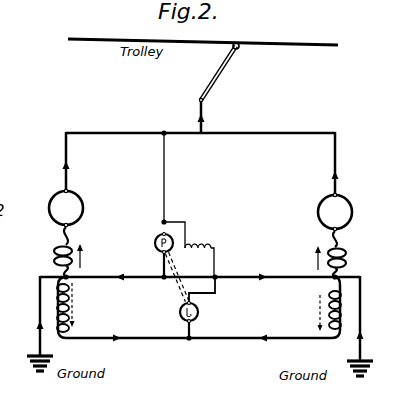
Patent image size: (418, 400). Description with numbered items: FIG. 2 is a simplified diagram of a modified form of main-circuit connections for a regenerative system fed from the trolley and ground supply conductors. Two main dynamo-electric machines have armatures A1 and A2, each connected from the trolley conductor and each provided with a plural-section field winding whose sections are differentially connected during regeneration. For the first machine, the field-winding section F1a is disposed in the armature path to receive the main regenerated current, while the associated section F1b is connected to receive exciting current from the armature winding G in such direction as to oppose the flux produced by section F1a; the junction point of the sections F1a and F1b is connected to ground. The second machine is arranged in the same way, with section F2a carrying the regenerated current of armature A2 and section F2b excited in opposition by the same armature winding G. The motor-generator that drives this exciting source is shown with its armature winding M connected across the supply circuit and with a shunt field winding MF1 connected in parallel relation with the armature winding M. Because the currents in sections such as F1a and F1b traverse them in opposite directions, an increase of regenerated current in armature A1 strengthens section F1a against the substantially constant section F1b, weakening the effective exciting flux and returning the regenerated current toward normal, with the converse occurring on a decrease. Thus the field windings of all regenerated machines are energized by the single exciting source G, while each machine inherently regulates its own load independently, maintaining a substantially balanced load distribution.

The armature A1 is at (79, 207).
The armature A2 is at (348, 211).
The field-winding section F1a is at (50, 252).
The field-winding section F1b is at (80, 307).
The field-winding section F2a is at (345, 254).
The field-winding section F2b is at (356, 307).
The armature winding M is at (153, 255).
The shunt field winding MF1 is at (194, 247).
The armature winding G is at (189, 307).